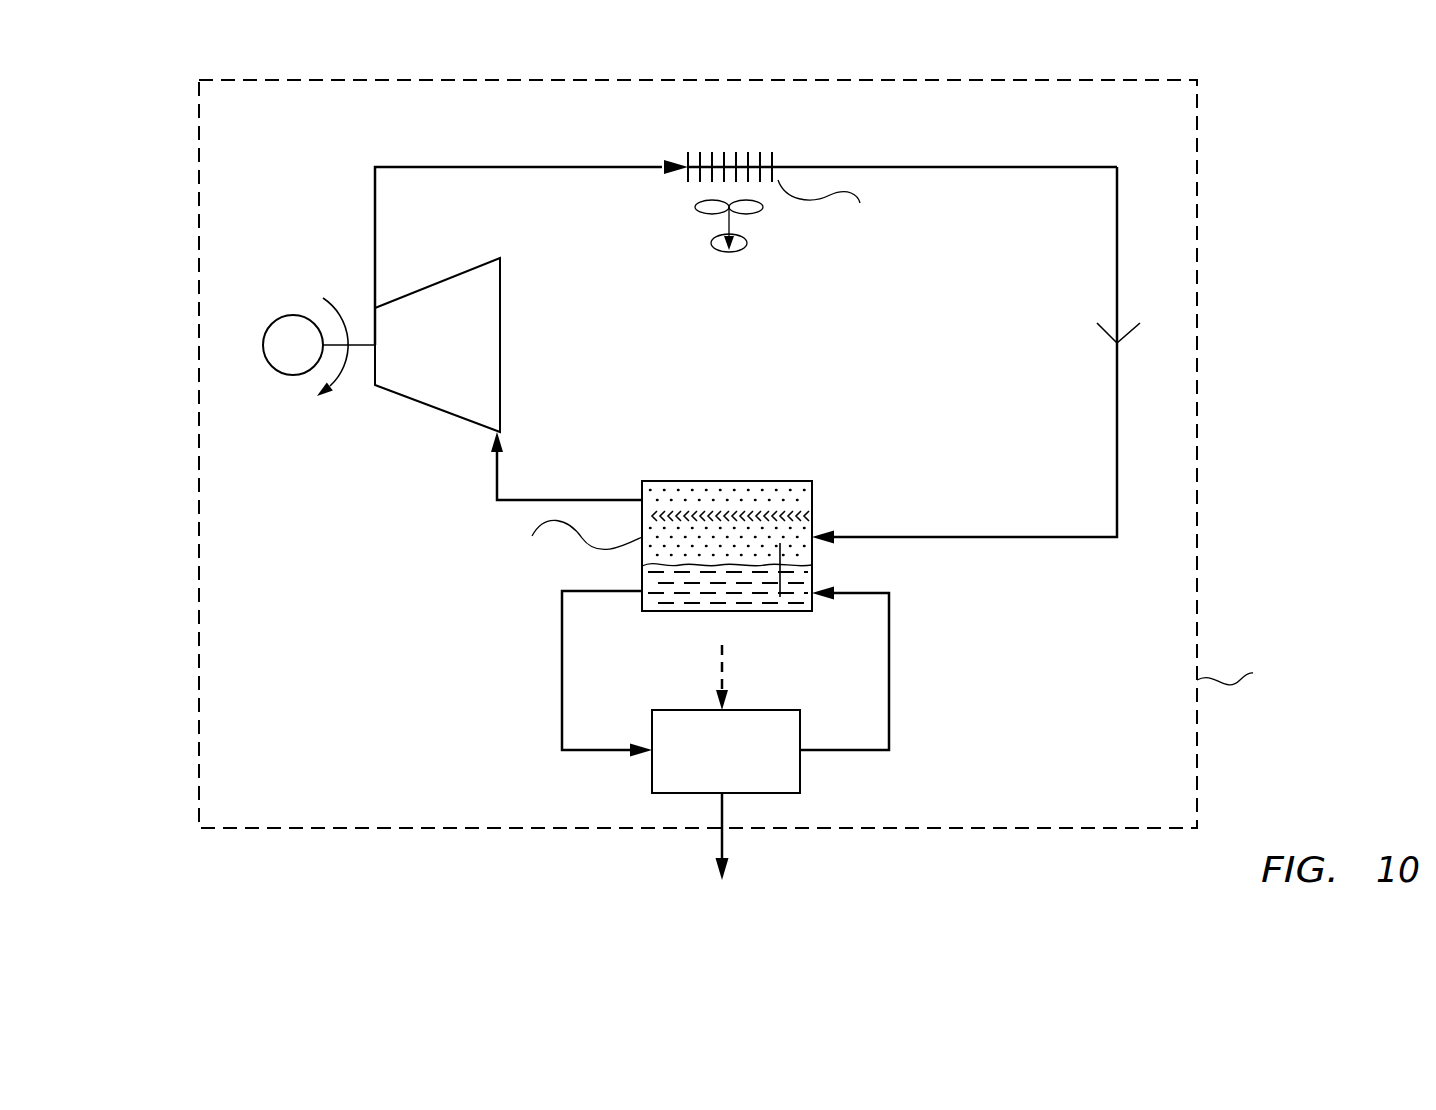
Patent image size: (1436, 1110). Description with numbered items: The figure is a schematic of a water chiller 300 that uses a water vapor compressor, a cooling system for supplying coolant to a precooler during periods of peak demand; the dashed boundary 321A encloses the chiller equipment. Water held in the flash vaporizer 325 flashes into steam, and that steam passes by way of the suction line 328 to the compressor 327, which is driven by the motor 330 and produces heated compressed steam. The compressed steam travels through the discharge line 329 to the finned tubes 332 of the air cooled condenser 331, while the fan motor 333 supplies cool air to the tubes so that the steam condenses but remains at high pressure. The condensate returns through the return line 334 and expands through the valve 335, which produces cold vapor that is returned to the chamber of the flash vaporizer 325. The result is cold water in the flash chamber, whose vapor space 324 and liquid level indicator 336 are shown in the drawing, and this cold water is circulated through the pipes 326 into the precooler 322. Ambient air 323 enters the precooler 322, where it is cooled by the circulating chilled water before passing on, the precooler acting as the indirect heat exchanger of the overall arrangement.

The water chiller system 300 is at (192, 545).
The system boundary 321A is at (1198, 493).
The precooler 322 is at (802, 783).
The ambient air 323 is at (737, 678).
The flash vaporizer 324 is at (772, 512).
The flash vaporizer 325 is at (653, 583).
The pipes 326 is at (890, 650).
The compressor 327 is at (500, 358).
The suction conduit 328 is at (497, 478).
The discharge conduit 329 is at (375, 243).
The motor 330 is at (293, 375).
The air cooled condenser 331 is at (902, 141).
The finned tubes 332 is at (724, 153).
The motor 333 is at (733, 221).
The condensate return conduit 334 is at (1117, 232).
The valve 335 is at (1137, 333).
The level probe 336 is at (782, 555).